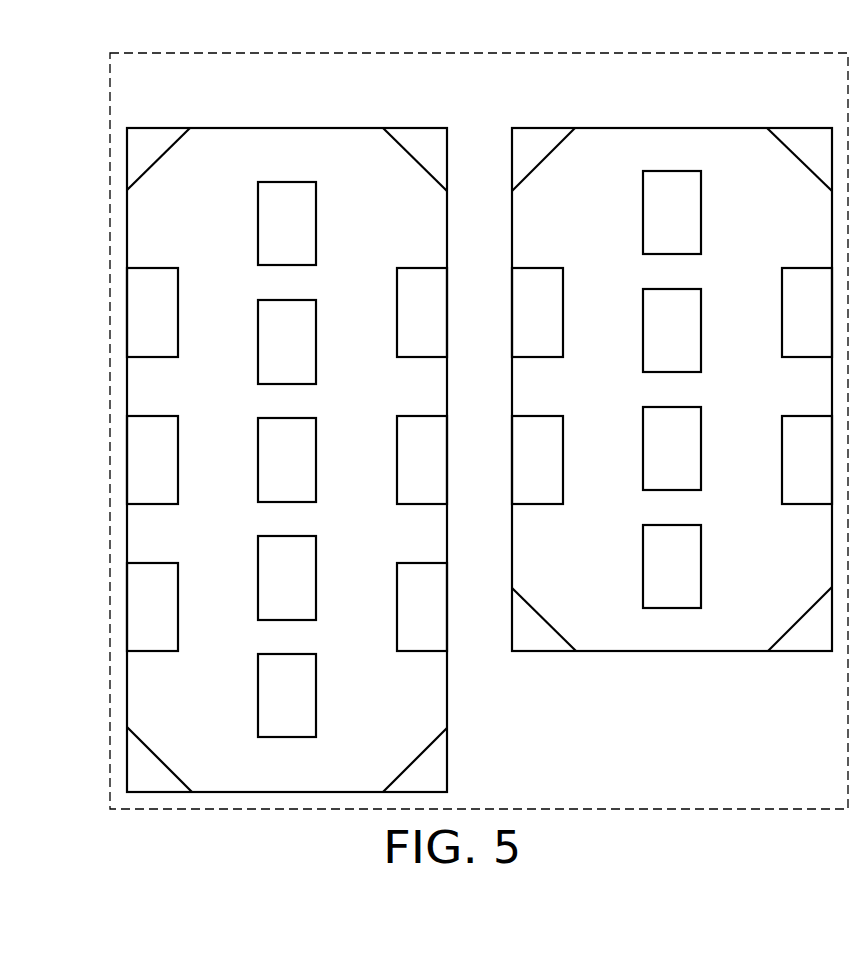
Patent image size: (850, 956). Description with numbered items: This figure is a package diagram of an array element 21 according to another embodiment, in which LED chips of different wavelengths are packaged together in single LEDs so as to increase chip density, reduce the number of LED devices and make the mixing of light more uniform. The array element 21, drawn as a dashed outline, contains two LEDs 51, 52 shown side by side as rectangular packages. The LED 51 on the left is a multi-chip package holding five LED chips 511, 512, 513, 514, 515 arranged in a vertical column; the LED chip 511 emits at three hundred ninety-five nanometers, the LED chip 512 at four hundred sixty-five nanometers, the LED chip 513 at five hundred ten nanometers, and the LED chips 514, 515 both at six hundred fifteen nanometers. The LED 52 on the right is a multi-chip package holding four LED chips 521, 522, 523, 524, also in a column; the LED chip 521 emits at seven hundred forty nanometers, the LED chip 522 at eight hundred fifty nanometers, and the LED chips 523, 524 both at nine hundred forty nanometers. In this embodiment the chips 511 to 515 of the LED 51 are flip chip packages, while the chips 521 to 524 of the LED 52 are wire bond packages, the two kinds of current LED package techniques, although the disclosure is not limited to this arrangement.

The array element 21 is at (60, 57).
The LED 51 is at (287, 128).
The LED 52 is at (672, 128).
The LED chip 511 is at (306, 240).
The LED chip 512 is at (306, 359).
The LED chip 513 is at (306, 477).
The LED chip 514 is at (306, 595).
The LED chip 515 is at (306, 712).
The LED chip 521 is at (691, 229).
The LED chip 522 is at (691, 347).
The LED chip 523 is at (691, 465).
The LED chip 524 is at (691, 583).